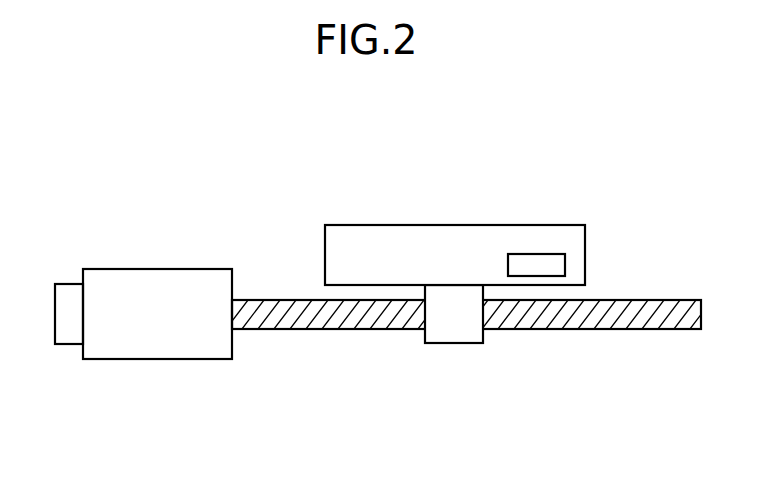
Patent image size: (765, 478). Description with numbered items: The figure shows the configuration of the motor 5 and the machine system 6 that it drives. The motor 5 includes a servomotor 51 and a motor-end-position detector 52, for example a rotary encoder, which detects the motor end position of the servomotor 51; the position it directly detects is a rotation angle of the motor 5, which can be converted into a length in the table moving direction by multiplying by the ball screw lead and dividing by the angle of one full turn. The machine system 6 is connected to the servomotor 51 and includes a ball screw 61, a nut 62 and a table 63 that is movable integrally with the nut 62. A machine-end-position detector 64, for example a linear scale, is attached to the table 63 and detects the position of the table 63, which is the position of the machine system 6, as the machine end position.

The motor 5 is at (141, 337).
The servomotor 51 is at (156, 268).
The motor-end-position detector 52 is at (67, 283).
The machine system 6 is at (461, 316).
The ball screw 61 is at (668, 299).
The nut 62 is at (455, 344).
The table 63 is at (433, 224).
The machine-end-position detector 64 is at (536, 253).